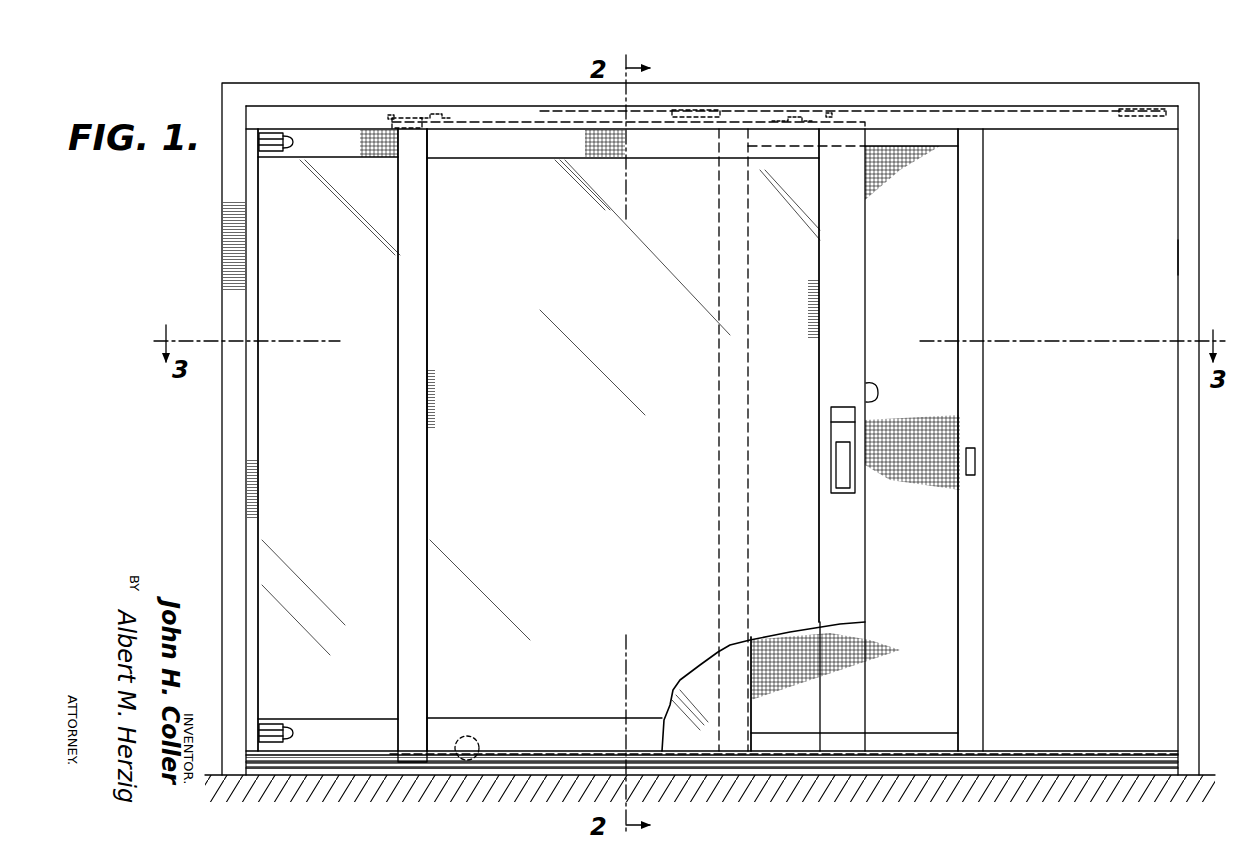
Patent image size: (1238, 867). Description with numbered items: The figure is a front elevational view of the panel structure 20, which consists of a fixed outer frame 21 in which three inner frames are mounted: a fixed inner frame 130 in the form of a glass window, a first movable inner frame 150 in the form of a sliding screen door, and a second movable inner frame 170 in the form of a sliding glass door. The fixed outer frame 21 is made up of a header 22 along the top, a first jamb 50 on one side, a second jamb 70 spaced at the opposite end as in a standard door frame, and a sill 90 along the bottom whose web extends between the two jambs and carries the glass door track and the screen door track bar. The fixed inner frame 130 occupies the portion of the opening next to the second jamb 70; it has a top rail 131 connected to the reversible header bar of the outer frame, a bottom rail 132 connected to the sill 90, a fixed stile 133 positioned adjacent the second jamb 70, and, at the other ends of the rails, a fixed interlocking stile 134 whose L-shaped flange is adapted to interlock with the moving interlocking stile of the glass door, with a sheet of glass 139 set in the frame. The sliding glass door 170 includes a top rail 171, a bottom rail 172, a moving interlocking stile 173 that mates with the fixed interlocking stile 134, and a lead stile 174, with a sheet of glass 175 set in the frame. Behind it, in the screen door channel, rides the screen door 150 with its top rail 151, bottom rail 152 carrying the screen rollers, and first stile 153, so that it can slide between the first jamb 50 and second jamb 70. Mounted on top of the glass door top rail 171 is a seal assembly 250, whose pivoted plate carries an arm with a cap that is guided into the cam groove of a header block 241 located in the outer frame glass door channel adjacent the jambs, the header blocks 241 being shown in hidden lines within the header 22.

The panel structure 20 is at (702, 407).
The fixed outer frame 21 is at (1188, 142).
The header 22 is at (930, 82).
The first jamb 50 is at (1176, 258).
The second jamb 70 is at (222, 280).
The sill 90 is at (487, 778).
The fixed inner frame 130 is at (286, 440).
The top rail 131 is at (348, 157).
The bottom rail 132 is at (318, 722).
The fixed stile 133 is at (260, 563).
The fixed interlocking stile 134 is at (752, 718).
The sheet of glass 139 is at (270, 441).
The first movable inner frame 150 is at (900, 440).
The top rail 151 is at (916, 150).
The bottom rail 152 is at (902, 735).
The first stile 153 is at (970, 410).
The second movable inner frame 170 is at (642, 445).
The top rail 171 is at (498, 158).
The bottom rail 172 is at (568, 718).
The moving interlocking stile 173 is at (417, 378).
The lead stile 174 is at (858, 246).
The sheet of glass 175 is at (450, 535).
The header block 241 is at (710, 108).
The seal assembly 250 is at (420, 112).